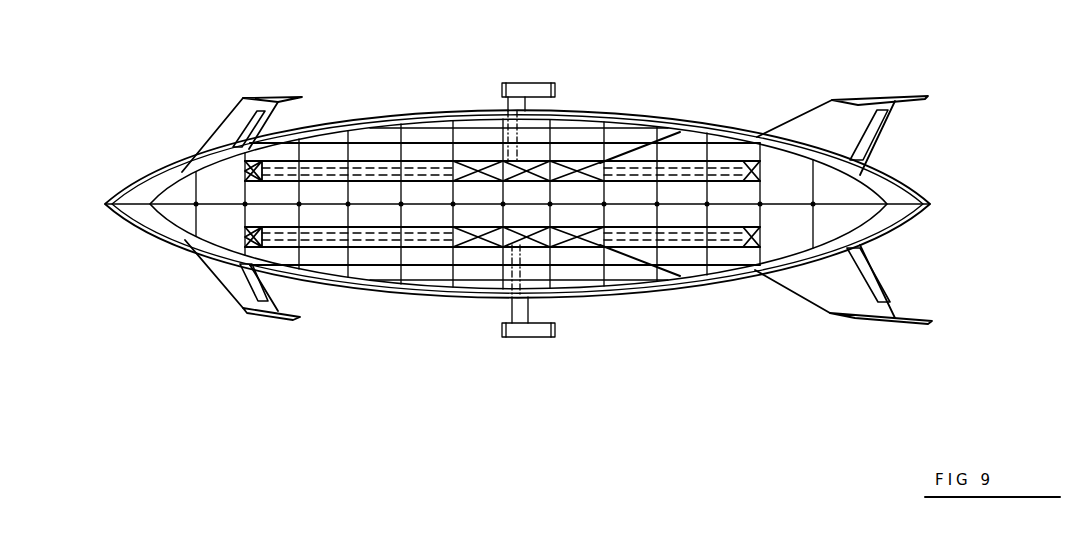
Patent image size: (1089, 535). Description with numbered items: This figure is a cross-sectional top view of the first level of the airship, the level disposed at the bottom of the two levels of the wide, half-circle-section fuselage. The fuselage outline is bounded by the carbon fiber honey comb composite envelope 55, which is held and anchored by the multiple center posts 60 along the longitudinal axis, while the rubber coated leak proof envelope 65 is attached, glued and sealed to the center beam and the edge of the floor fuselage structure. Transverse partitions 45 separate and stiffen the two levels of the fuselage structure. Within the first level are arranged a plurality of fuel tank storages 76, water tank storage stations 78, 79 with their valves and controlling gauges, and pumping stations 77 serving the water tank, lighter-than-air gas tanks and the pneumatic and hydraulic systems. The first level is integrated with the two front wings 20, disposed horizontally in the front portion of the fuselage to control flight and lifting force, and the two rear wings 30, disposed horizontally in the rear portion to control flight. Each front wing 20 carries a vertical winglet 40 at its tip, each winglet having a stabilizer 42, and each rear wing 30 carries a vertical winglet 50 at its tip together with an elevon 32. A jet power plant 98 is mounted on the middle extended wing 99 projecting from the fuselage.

The front wing 20 is at (218, 128).
The vertical winglet 40 is at (274, 96).
The stabilizer 42 is at (270, 120).
The water tank storage station 78 is at (250, 178).
The rear wing 30 is at (823, 133).
The vertical winglet 50 is at (880, 98).
The elevon 32 is at (872, 133).
The water tank storage station 79 is at (750, 167).
The jet power plant 98 is at (517, 83).
The middle extended wing 99 is at (527, 99).
The center post 60 is at (452, 203).
The partition 45 is at (500, 158).
The fuel tank storage 76 is at (455, 163).
The pumping station 77 is at (516, 160).
The envelope 65 is at (580, 297).
The carbon fiber honey comb composite envelope 55 is at (597, 300).